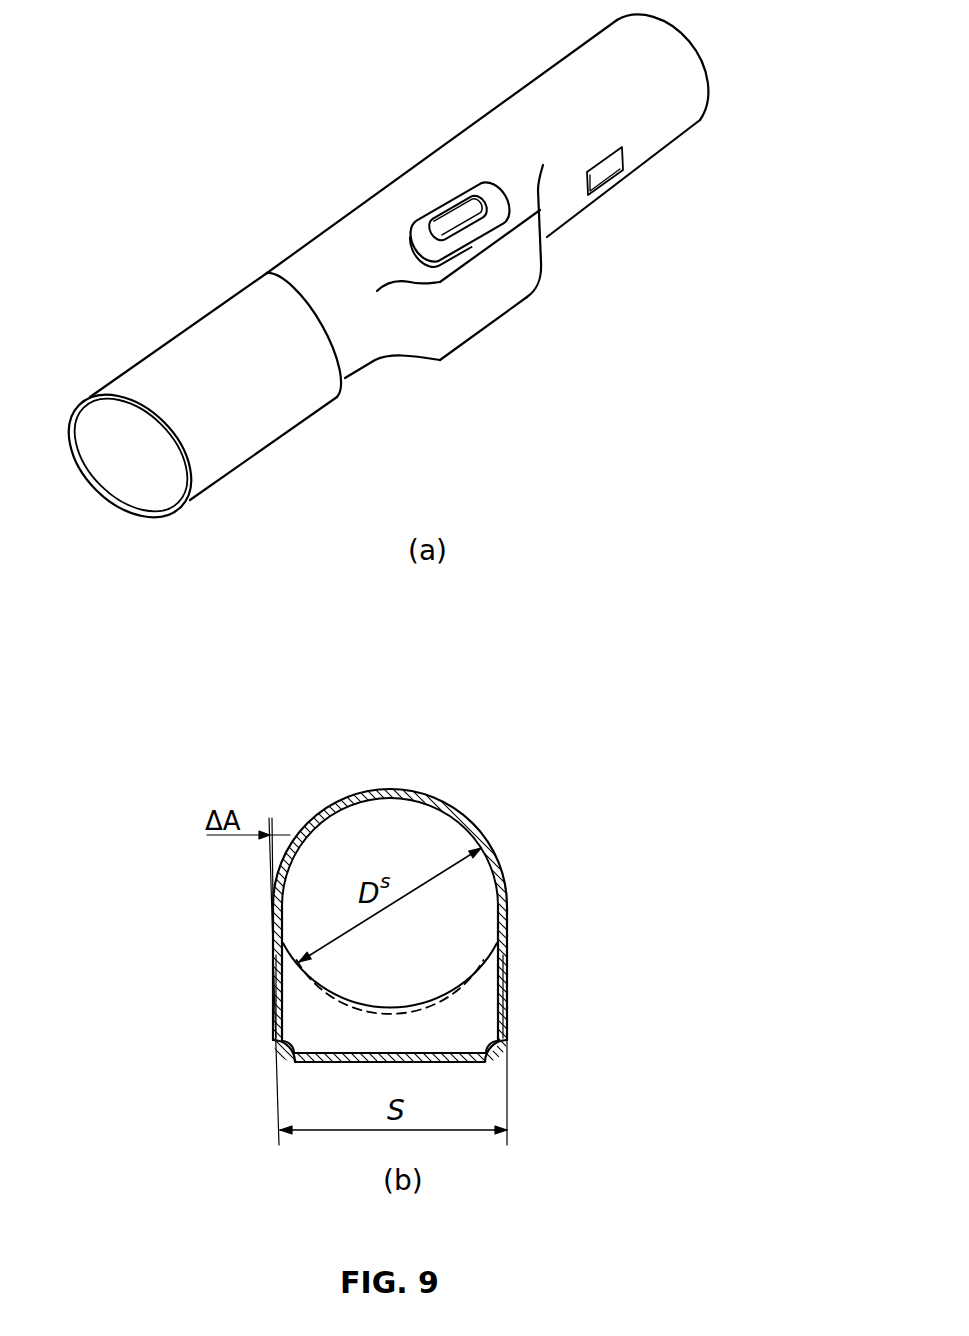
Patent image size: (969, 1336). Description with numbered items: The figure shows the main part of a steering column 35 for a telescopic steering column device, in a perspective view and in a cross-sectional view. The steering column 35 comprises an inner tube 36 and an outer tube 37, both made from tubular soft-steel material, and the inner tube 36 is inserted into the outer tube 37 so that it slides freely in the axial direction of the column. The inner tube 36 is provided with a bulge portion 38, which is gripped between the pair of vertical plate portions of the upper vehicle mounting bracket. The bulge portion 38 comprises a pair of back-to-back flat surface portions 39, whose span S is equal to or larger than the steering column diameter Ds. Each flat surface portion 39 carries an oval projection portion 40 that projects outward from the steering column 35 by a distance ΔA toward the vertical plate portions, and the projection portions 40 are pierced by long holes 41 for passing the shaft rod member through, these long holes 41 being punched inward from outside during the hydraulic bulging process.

The steering column 35 is at (268, 272).
The inner tube 36 is at (652, 133).
The outer tube 37 is at (250, 447).
The bulge portion 38 is at (498, 295).
The flat surface portions 39 is at (437, 270).
The projection portions 40 is at (437, 230).
The long holes 41 is at (416, 226).